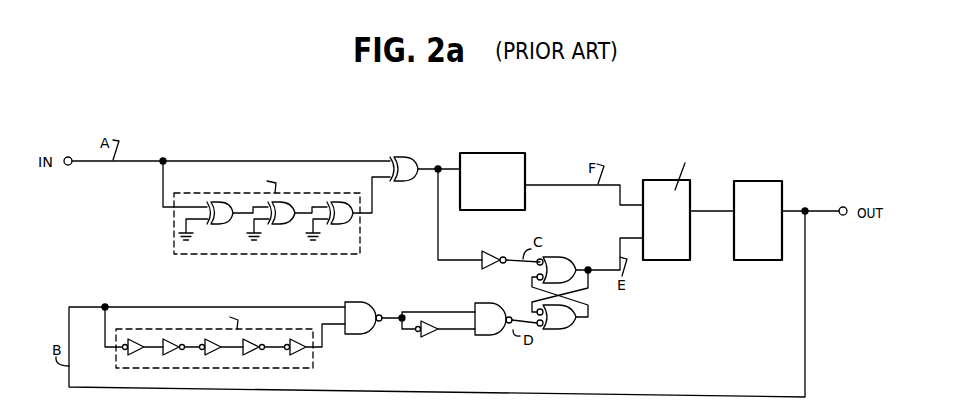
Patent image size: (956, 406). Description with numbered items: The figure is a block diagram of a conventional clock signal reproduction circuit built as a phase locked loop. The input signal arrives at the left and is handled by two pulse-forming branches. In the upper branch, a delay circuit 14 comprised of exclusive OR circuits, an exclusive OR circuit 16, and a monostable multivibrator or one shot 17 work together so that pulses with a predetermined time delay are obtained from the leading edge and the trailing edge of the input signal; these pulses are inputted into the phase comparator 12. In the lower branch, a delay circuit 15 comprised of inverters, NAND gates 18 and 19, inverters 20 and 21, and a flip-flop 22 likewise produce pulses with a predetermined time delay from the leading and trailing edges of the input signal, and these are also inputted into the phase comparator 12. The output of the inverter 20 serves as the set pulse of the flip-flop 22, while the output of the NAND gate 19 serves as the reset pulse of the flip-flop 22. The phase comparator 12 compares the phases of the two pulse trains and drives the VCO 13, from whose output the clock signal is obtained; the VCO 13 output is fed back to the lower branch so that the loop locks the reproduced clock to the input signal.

The phase comparator 12 is at (672, 249).
The VCO 13 is at (756, 249).
The delay circuit 14 is at (297, 255).
The delay circuit 15 is at (315, 355).
The exclusive OR circuit 16 is at (408, 157).
The monostable multivibrator 17 is at (511, 162).
The NAND gate 18 is at (367, 305).
The NAND gate 19 is at (490, 310).
The inverter 20 is at (486, 270).
The inverter 21 is at (432, 337).
The flip-flop 22 is at (582, 300).